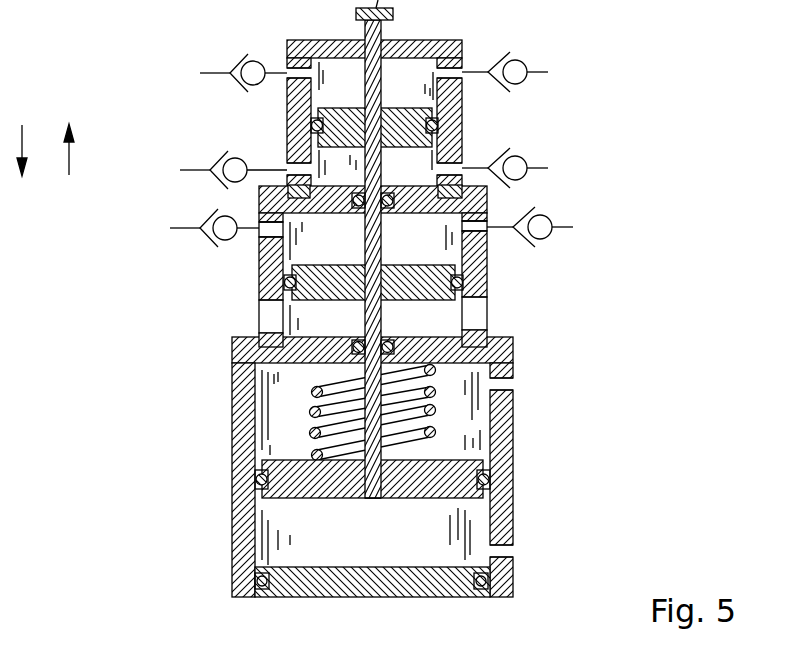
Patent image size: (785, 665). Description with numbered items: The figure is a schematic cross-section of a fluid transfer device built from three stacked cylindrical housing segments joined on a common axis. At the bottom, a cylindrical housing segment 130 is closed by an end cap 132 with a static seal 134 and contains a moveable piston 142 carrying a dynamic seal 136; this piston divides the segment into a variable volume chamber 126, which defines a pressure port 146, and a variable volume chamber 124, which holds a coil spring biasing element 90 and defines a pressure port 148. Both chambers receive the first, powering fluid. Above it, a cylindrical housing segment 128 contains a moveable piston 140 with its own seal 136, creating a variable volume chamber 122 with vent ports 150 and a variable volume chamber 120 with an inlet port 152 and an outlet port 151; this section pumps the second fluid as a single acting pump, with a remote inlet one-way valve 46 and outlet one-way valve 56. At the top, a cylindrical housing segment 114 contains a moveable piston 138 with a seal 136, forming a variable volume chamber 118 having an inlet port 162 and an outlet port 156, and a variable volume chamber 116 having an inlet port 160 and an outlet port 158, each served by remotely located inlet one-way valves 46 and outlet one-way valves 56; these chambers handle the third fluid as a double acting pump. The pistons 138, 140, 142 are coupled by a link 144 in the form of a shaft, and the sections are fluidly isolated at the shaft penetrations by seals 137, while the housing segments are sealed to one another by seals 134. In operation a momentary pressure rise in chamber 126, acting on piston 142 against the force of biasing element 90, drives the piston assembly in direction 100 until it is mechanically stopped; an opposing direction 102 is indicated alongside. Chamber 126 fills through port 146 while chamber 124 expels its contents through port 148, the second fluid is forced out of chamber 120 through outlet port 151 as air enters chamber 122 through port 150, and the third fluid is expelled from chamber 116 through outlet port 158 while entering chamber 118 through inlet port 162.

The direction 100 is at (65, 162).
The direction arrow 102 is at (20, 138).
The inlet one-way valve 46 is at (241, 62).
The outlet one-way valve 56 is at (527, 63).
The biasing element 90 is at (310, 392).
The cylindrical housing segment 114 is at (445, 40).
The variable volume chamber 116 is at (393, 83).
The variable volume chamber 118 is at (394, 176).
The variable volume chamber 120 is at (402, 241).
The variable volume chamber 122 is at (401, 326).
The variable volume chamber 124 is at (446, 424).
The variable volume chamber 126 is at (414, 549).
The cylindrical housing segment 128 is at (487, 287).
The cylindrical housing segment 130 is at (497, 442).
The end cap 132 is at (376, 597).
The static seal 134 is at (288, 190).
The dynamic seal 136 is at (311, 124).
The seal 137 is at (358, 213).
The piston 138 is at (392, 105).
The piston 140 is at (258, 265).
The piston 142 is at (487, 457).
The link 144 is at (352, 500).
The pressure port 146 is at (505, 548).
The pressure port 148 is at (503, 382).
The vent port 150 is at (258, 317).
The outlet port 151 is at (488, 228).
The inlet port 152 is at (258, 233).
The outlet port 156 is at (462, 167).
The outlet port 158 is at (462, 72).
The inlet port 160 is at (287, 80).
The inlet port 162 is at (287, 165).